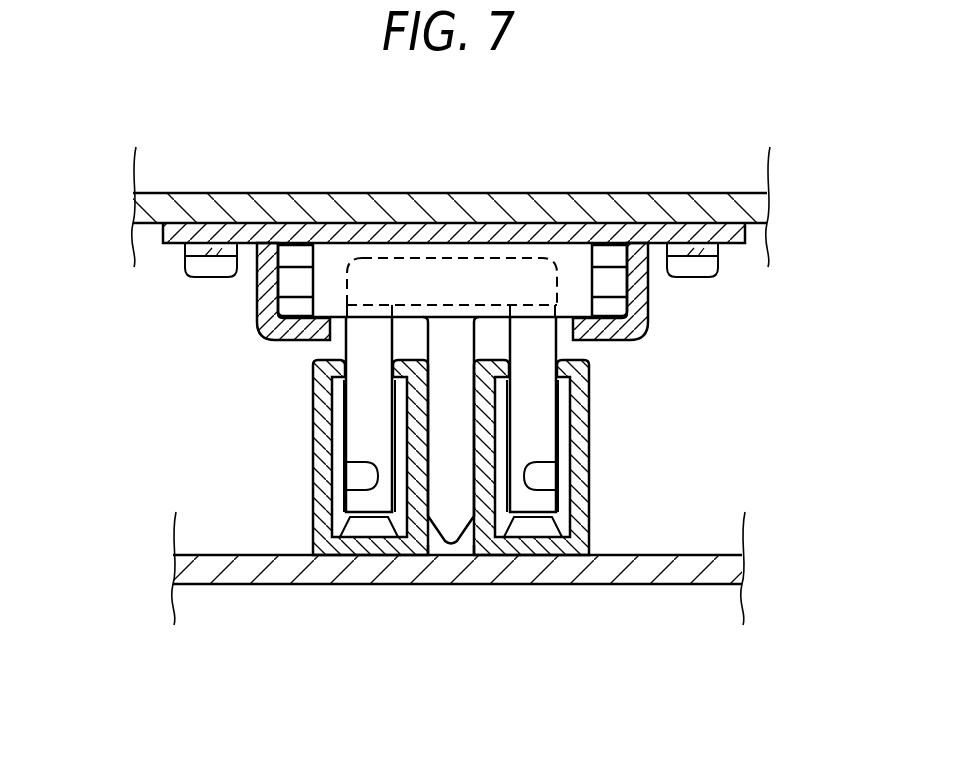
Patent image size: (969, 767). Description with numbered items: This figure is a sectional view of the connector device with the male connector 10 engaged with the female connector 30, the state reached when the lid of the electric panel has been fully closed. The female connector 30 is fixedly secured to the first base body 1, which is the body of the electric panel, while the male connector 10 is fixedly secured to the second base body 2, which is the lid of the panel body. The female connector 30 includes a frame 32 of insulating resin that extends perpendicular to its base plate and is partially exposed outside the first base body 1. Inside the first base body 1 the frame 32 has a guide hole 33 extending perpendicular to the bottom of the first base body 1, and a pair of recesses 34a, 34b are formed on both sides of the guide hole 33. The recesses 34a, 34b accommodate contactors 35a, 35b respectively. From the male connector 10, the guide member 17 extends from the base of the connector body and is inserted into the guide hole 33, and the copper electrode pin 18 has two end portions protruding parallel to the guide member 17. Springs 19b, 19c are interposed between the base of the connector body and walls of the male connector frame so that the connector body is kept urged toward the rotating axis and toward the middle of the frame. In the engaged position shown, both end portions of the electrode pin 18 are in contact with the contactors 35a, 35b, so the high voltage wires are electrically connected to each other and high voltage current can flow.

The first base body 1 is at (282, 570).
The second base body 2 is at (428, 192).
The male connector 10 is at (387, 390).
The guide member 17 is at (442, 462).
The electrode pin 18 is at (532, 424).
The spring 19b is at (612, 282).
The spring 19c is at (293, 282).
The female connector 30 is at (416, 494).
The frame 32 is at (578, 476).
The guide hole 33 is at (467, 550).
The recess 34a is at (523, 528).
The recess 34b is at (362, 528).
The contactor 35a is at (545, 500).
The contactor 35b is at (340, 492).